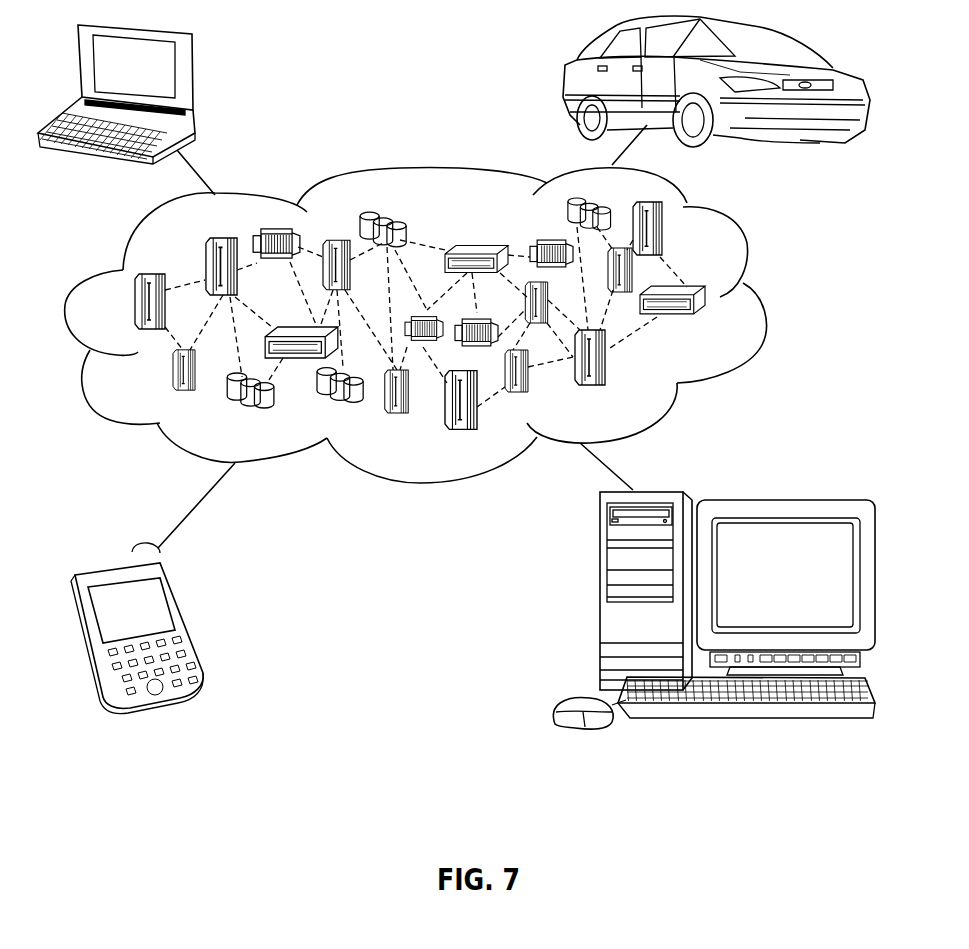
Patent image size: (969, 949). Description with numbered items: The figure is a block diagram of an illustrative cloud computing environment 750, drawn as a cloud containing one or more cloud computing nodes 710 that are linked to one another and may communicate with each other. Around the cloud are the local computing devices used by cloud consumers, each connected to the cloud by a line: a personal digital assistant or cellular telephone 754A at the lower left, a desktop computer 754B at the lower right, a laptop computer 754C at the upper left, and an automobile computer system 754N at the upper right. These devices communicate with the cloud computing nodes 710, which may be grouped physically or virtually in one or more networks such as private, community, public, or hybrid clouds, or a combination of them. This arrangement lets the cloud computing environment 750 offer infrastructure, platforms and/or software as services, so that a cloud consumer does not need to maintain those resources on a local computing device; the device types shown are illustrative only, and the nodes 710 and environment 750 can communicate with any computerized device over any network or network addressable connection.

The laptop computer 754C is at (193, 70).
The automobile computer system 754N is at (572, 75).
The personal digital assistant (PDA) or cellular telephone 754A is at (185, 620).
The desktop computer 754B is at (600, 597).
The cloud computing environment 750 is at (748, 262).
The cloud computing nodes 710 is at (725, 318).